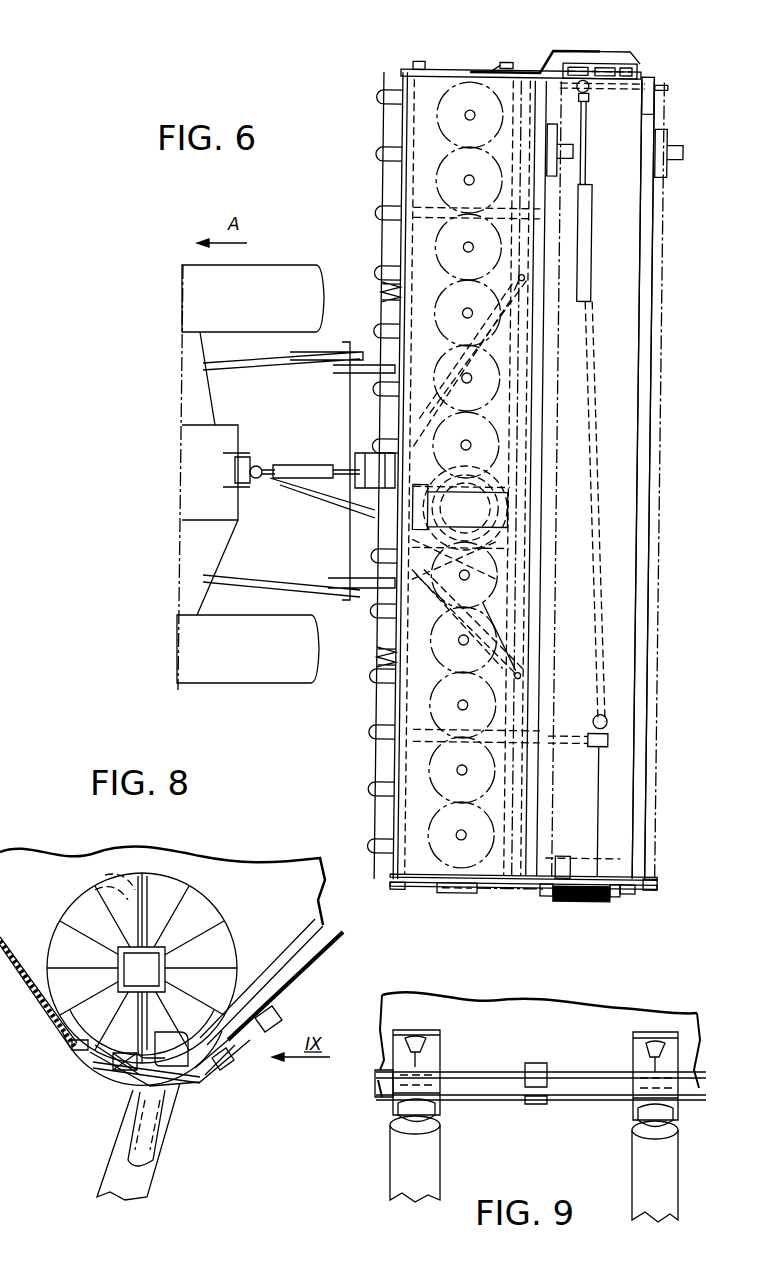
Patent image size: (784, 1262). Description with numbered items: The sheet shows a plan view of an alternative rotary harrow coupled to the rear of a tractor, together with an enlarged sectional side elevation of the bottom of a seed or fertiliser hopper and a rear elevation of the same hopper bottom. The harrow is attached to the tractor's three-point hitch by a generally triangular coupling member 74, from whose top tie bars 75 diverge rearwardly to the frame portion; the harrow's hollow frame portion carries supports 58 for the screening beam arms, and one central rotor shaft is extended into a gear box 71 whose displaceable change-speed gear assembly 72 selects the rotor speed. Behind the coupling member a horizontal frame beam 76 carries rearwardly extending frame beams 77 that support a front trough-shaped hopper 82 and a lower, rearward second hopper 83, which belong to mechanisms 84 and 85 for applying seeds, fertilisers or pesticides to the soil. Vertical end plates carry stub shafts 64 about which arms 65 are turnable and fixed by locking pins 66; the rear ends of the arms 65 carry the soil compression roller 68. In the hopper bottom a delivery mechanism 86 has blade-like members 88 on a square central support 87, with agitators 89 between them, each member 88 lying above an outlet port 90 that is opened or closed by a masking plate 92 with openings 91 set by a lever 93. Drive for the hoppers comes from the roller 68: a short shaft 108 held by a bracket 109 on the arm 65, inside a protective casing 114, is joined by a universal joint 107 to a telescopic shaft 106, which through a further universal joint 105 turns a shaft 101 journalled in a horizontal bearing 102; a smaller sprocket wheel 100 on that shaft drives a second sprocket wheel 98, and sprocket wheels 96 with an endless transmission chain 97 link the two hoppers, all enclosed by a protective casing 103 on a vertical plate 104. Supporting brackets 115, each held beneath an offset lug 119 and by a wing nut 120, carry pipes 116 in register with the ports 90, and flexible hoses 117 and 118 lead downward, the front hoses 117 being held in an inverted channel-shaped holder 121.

In FIG. 6, the support 58 is at (385, 660).
In FIG. 6, the stub shaft 64 is at (392, 887).
In FIG. 6, the arm 65 is at (470, 78).
In FIG. 6, the locking pin 66 is at (505, 64).
In FIG. 6, the roller 68 is at (664, 230).
In FIG. 6, the gear box 71 is at (461, 486).
In FIG. 6, the change-speed gear assembly 72 is at (520, 512).
In FIG. 6, the coupling member 74 is at (385, 395).
In FIG. 6, the tie bar 75 is at (469, 475).
In FIG. 6, the frame beam 76 is at (432, 700).
In FIG. 6, the frame beam 77 is at (442, 218).
In FIG. 6, the hopper 82 is at (430, 78).
In FIG. 6, the second hopper 83 is at (622, 370).
In FIG. 8, the second hopper 83 is at (240, 875).
In FIG. 9, the second hopper 83 is at (478, 1008).
In FIG. 6, the mechanism 84 is at (412, 112).
In FIG. 6, the mechanism 85 is at (650, 302).
In FIG. 8, the delivery mechanism 86 is at (118, 945).
In FIG. 8, the central support 87 is at (166, 968).
In FIG. 8, the blade-like member 88 is at (215, 920).
In FIG. 8, the agitator 89 is at (118, 868).
In FIG. 8, the outlet port 90 is at (175, 1030).
In FIG. 8, the opening 91 is at (140, 1115).
In FIG. 9, the opening 91 is at (450, 1070).
In FIG. 8, the masking plate 92 is at (125, 1053).
In FIG. 9, the masking plate 92 is at (558, 1078).
In FIG. 6, the lever 93 is at (575, 152).
In FIG. 8, the lever 93 is at (343, 942).
In FIG. 6, the sprocket wheel 96 is at (567, 855).
In FIG. 6, the endless transmission chain 97 is at (512, 887).
In FIG. 6, the second sprocket wheel 98 is at (572, 900).
In FIG. 6, the smaller sprocket wheel 100 is at (628, 893).
In FIG. 6, the shaft 101 is at (600, 808).
In FIG. 6, the horizontal bearing 102 is at (580, 748).
In FIG. 6, the protective casing 103 is at (592, 900).
In FIG. 6, the vertical plate 104 is at (652, 887).
In FIG. 6, the universal joint 105 is at (592, 719).
In FIG. 6, the telescopic shaft 106 is at (600, 302).
In FIG. 6, the universal joint 107 is at (592, 92).
In FIG. 6, the short shaft 108 is at (597, 66).
In FIG. 6, the bracket 109 is at (582, 62).
In FIG. 6, the protective casing 114 is at (642, 68).
In FIG. 9, the supporting bracket 115 is at (437, 1058).
In FIG. 8, the pipe 116 is at (140, 1086).
In FIG. 9, the pipe 116 is at (410, 1113).
In FIG. 6, the flexible hose 117 is at (382, 157).
In FIG. 8, the flexible hose 118 is at (110, 1173).
In FIG. 9, the flexible hose 118 is at (393, 1150).
In FIG. 8, the offset lug 119 is at (78, 1046).
In FIG. 8, the wing nut 120 is at (280, 1022).
In FIG. 9, the wing nut 120 is at (417, 1037).
In FIG. 6, the holder 121 is at (388, 232).